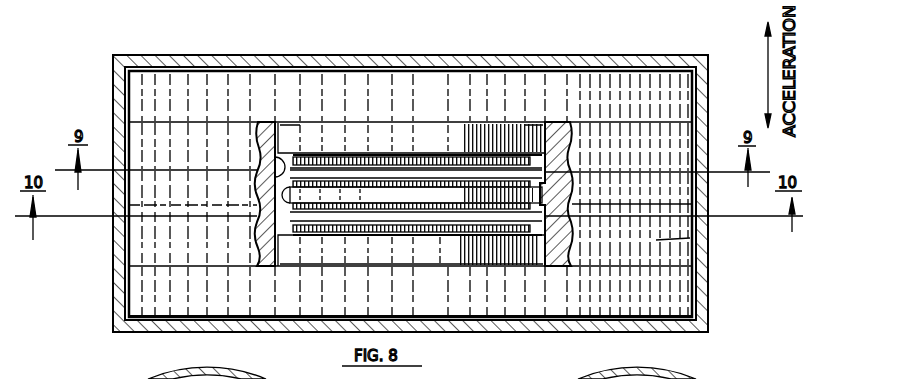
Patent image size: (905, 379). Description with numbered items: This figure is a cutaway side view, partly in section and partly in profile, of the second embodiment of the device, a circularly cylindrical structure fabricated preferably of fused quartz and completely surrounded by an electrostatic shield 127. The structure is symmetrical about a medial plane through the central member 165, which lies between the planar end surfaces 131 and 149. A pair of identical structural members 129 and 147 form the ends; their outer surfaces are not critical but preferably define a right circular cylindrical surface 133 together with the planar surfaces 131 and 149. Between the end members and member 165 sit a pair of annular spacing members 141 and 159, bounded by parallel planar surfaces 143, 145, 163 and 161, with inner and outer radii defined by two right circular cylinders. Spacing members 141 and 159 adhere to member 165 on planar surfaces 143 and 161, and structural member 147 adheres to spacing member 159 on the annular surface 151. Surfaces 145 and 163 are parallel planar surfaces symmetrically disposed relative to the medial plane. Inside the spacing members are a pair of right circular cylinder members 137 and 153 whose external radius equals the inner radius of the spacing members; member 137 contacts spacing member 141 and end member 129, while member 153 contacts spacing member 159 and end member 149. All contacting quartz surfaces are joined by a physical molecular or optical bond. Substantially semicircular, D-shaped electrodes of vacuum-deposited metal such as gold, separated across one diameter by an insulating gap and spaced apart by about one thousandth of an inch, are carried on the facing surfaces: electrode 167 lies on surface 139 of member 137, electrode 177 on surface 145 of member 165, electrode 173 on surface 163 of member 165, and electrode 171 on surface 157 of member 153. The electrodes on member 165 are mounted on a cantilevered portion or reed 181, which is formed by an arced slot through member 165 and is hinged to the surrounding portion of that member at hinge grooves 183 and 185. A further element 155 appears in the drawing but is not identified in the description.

The electrostatic shield 127 is at (701, 85).
The structural member 129 is at (395, 78).
The planar end surface 131 is at (517, 72).
The right circular cylindrical surface 133 is at (628, 84).
The right circular cylinder member 137 is at (342, 142).
The surface 139 is at (398, 153).
The annular spacing member 141 is at (196, 134).
The planar surface 143 is at (647, 123).
The planar surface 145 is at (255, 182).
The structural member 147 is at (656, 296).
The planar end surface 149 is at (530, 322).
The annular surface 151 is at (275, 266).
The right circular cylinder member 153 is at (382, 254).
The lower core block 155 is at (355, 258).
The surface 157 is at (469, 235).
The annular spacing member 159 is at (690, 238).
The planar surface 161 is at (248, 264).
The planar surface 163 is at (633, 206).
The member 165 is at (667, 195).
The electrode 167 is at (342, 158).
The electrode 171 is at (411, 223).
The electrode 173 is at (318, 209).
The electrode 177 is at (440, 182).
The cantilevered member 181 is at (418, 203).
The hinge groove 183 is at (273, 158).
The hinge groove 185 is at (256, 197).